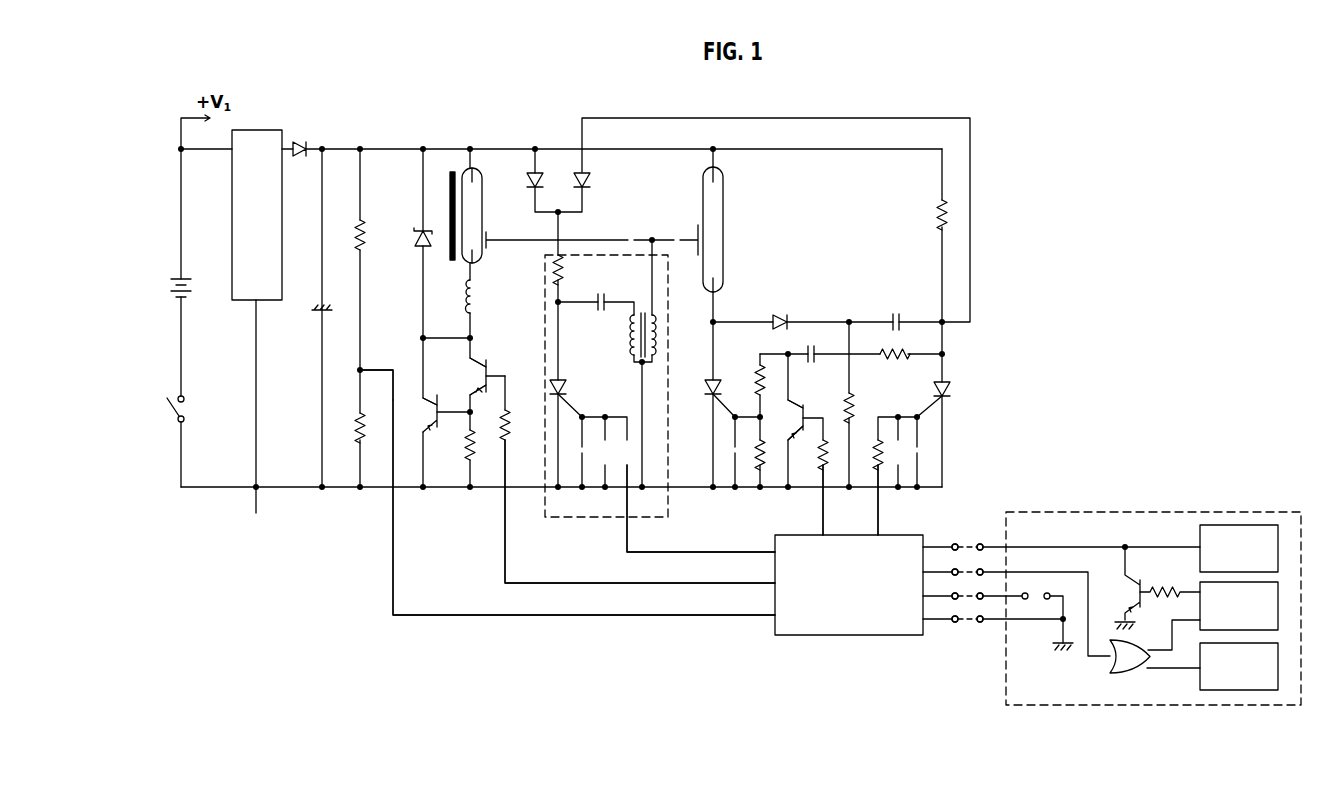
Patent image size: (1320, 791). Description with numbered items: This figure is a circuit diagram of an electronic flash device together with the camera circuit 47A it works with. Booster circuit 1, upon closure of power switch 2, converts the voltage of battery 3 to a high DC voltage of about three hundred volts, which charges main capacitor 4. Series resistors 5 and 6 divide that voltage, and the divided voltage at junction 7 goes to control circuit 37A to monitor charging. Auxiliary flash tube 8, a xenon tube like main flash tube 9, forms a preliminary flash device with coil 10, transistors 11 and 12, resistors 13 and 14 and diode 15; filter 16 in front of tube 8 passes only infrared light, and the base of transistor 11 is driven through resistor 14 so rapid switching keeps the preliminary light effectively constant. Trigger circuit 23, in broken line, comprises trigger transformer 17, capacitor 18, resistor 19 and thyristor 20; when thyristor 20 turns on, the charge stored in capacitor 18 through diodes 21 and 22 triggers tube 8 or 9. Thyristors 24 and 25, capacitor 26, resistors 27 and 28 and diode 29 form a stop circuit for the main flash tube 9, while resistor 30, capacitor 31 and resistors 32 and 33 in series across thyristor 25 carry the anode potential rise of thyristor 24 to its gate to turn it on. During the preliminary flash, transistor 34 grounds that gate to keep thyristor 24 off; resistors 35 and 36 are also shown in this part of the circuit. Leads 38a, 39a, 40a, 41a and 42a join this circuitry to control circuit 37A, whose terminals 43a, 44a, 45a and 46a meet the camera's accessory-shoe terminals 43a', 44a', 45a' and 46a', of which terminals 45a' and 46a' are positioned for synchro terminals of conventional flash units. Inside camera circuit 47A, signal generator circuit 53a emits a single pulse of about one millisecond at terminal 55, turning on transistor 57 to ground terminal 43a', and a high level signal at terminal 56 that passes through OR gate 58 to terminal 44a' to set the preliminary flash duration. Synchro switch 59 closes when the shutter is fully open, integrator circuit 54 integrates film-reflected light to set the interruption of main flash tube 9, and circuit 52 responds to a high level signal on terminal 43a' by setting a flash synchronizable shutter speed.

The booster circuit 1 is at (269, 194).
The power switch 2 is at (172, 408).
The power source battery 3 is at (174, 293).
The main capacitor 4 is at (318, 318).
The resistor 5 is at (363, 224).
The resistor 6 is at (357, 430).
The junction 7 is at (362, 368).
The auxiliary flash tube 8 is at (482, 182).
The main flash tube 9 is at (723, 190).
The coil 10 is at (478, 295).
The transistor 11 is at (490, 362).
The transistor 12 is at (430, 398).
The resistor 13 is at (468, 443).
The resistor 14 is at (507, 426).
The diode 15 is at (420, 246).
The filter 16 is at (445, 234).
The trigger transformer 17 is at (656, 334).
The capacitor 18 is at (596, 307).
The resistor 19 is at (563, 268).
The thyristor 20 is at (567, 387).
The diode 21 is at (530, 186).
The diode 22 is at (589, 180).
The trigger circuit 23 is at (545, 517).
The thyristor 24 is at (706, 388).
The thyristor 25 is at (948, 390).
The capacitor 26 is at (897, 317).
The resistor 27 is at (937, 213).
The resistor 28 is at (852, 410).
The diode 29 is at (785, 318).
The resistor 30 is at (893, 356).
The capacitor 31 is at (813, 356).
The resistor 32 is at (758, 380).
The resistor 33 is at (762, 446).
The transistor 34 is at (806, 407).
The resistor 35 is at (820, 450).
The resistor 36 is at (876, 446).
The control circuit 37A is at (849, 585).
The lead 38a is at (742, 616).
The lead 39a is at (707, 583).
The lead 40a is at (712, 550).
The lead 41a is at (822, 513).
The lead 42a is at (879, 526).
The terminal 43a is at (954, 527).
The terminal 44a is at (892, 539).
The terminal 45a is at (871, 629).
The terminal 46a is at (913, 636).
The external terminal 43a' is at (1019, 518).
The external terminal 44a' is at (1016, 568).
The external terminal 45a' is at (949, 652).
The external terminal 46a' is at (978, 646).
The camera circuit 47A is at (1192, 512).
The circuit 52 is at (1239, 548).
The signal generator circuit 53a is at (1239, 606).
The integrator circuit 54 is at (1239, 666).
The terminal 55 is at (1192, 591).
The terminal 56 is at (1187, 628).
The transistor 57 is at (1129, 590).
The OR gate 58 is at (1120, 671).
The synchro switch 59 is at (1034, 600).